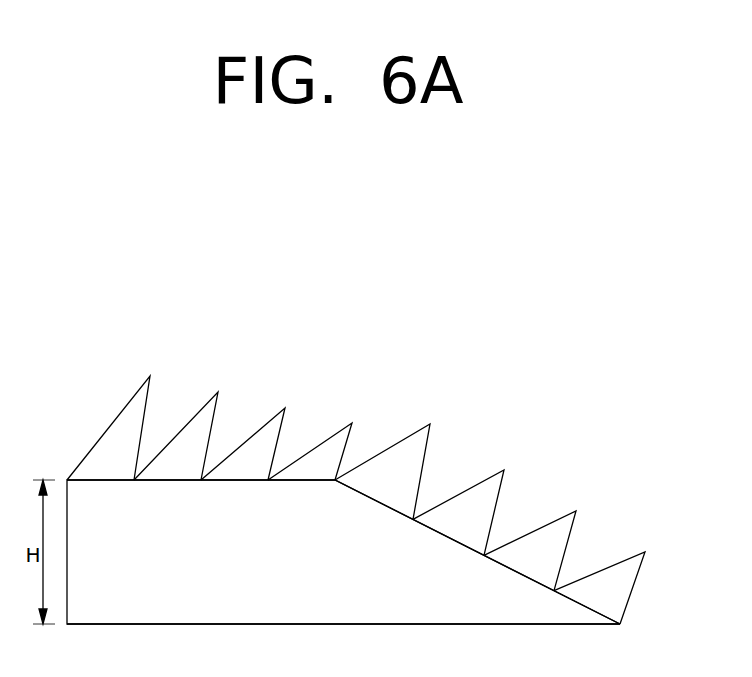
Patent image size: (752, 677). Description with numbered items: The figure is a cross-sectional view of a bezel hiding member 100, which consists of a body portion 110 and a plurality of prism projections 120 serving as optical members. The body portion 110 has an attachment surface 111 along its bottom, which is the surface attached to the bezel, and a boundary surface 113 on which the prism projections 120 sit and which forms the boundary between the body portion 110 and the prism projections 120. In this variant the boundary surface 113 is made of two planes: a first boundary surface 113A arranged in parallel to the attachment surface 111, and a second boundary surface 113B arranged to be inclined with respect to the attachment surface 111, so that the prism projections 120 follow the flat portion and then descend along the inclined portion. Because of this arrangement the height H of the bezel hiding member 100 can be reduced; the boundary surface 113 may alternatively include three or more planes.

The bezel hiding member 100 is at (355, 386).
The body portion 110 is at (225, 555).
The attachment surface 111 is at (363, 624).
The boundary surface 113 is at (343, 454).
The first boundary surface 113A is at (172, 480).
The second boundary surface 113B is at (375, 500).
The prism projections 120 is at (420, 445).